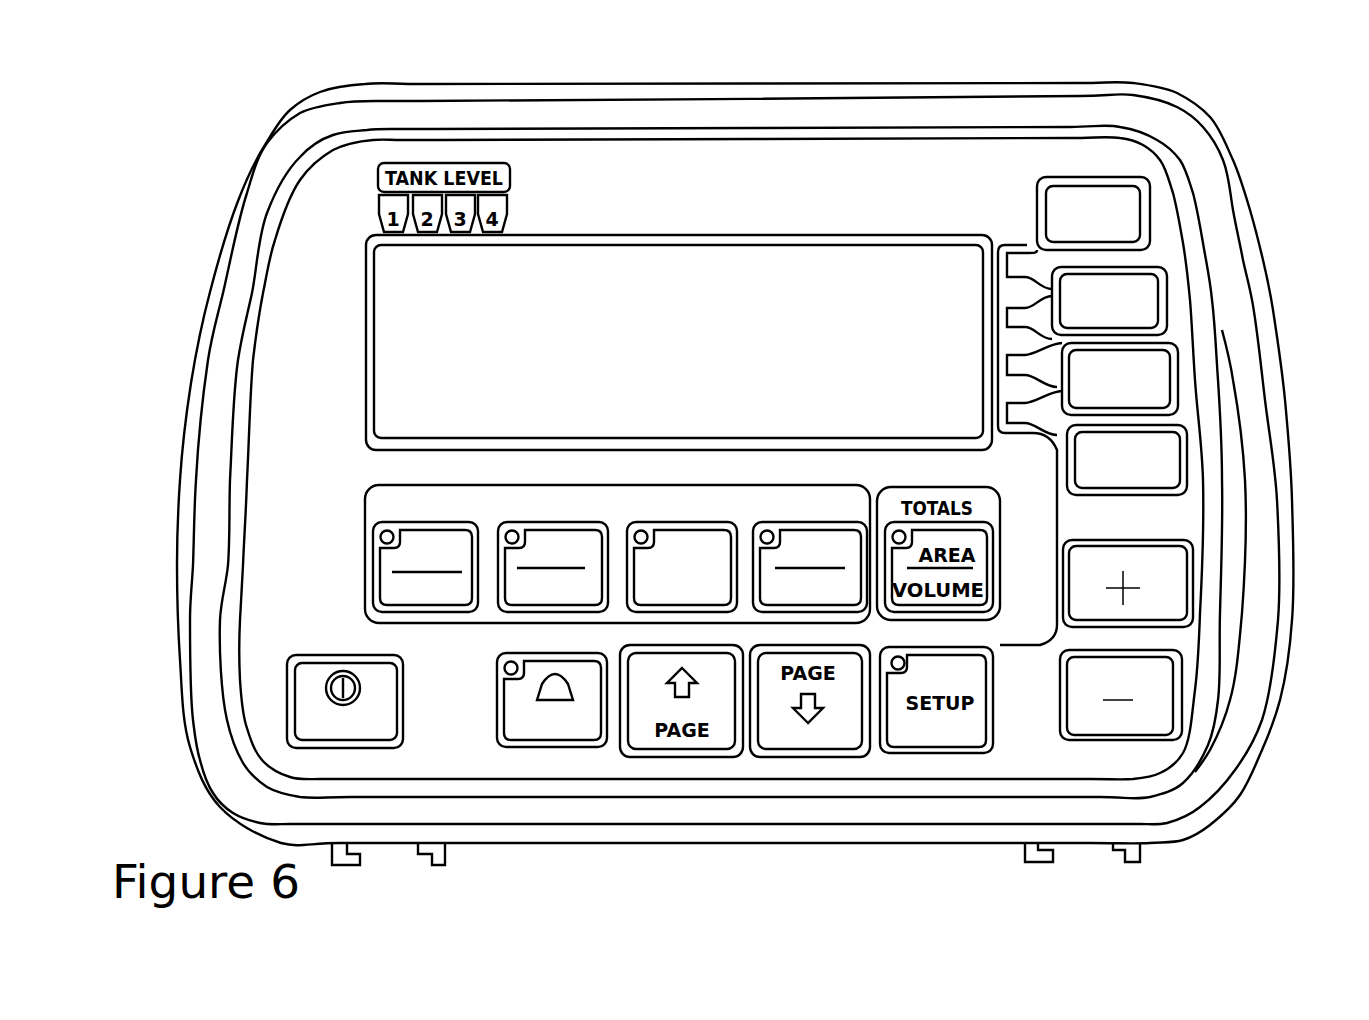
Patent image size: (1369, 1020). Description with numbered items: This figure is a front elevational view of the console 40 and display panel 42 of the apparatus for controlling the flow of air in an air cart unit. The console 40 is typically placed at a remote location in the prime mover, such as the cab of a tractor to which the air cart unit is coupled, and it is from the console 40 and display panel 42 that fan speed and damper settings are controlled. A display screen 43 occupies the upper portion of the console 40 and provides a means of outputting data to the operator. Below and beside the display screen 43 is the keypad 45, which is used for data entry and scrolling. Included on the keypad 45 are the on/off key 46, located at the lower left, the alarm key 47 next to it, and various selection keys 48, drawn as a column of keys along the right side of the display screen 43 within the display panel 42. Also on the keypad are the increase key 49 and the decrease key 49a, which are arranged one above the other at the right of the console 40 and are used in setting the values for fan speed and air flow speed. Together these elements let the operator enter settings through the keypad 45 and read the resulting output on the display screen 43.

The console 40 is at (200, 192).
The display panel 42 is at (250, 293).
The display screen 43 is at (403, 268).
The keypad 45 is at (370, 531).
The on/off key 46 is at (287, 692).
The alarm key 47 is at (532, 752).
The selection keys 48 is at (1190, 427).
The increase key 49 is at (1193, 617).
The decrease key 49a is at (1167, 733).